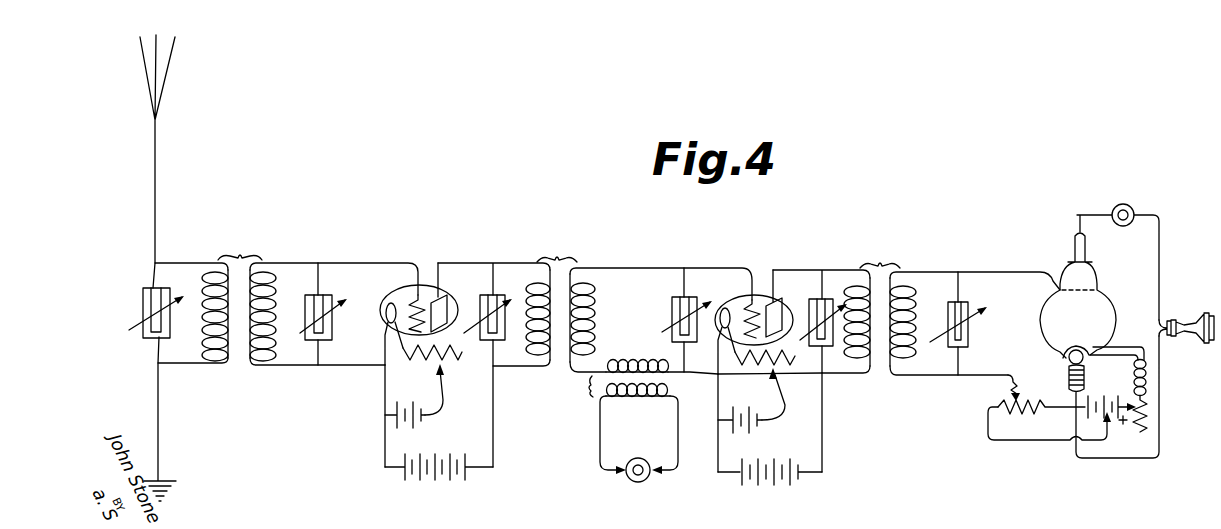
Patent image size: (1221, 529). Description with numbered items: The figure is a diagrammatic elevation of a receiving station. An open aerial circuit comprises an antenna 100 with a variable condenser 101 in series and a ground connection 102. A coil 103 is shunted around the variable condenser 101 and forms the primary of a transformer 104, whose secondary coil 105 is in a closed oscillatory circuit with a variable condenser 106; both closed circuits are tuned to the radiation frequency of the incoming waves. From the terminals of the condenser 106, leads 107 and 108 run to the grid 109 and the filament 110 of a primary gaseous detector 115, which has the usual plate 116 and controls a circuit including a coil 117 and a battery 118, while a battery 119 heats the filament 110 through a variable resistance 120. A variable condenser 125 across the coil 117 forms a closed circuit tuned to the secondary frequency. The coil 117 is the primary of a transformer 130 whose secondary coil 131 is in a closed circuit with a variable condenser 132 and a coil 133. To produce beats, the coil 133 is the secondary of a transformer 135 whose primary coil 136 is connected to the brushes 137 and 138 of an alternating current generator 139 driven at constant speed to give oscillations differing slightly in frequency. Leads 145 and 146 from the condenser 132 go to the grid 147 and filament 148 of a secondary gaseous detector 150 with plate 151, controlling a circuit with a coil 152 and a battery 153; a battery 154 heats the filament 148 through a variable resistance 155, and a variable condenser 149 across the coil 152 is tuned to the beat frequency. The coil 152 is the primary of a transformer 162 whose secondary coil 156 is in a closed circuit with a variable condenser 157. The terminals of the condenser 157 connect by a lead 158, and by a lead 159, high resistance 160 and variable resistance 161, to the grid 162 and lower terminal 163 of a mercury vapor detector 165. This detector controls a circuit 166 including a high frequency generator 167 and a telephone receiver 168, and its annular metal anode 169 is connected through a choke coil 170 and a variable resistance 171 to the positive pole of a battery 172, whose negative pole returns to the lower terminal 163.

The antenna 100 is at (175, 172).
The variable condenser 101 is at (150, 340).
The ground 102 is at (168, 484).
The coil 103 is at (206, 274).
The transformer 104 is at (245, 255).
The secondary coil 105 is at (274, 286).
The variable condenser 106 is at (328, 291).
The lead 107 is at (361, 266).
The lead 108 is at (352, 367).
The grid 109 is at (370, 321).
The filament 110 is at (415, 303).
The primary gaseous detector 115 is at (421, 284).
The plate 116 is at (441, 306).
The coil 117 is at (532, 345).
The battery 118 is at (444, 479).
The battery 119 is at (407, 406).
The variable resistance 120 is at (446, 360).
The variable condenser 125 is at (494, 308).
The transformer 130 is at (559, 252).
The secondary coil 131 is at (592, 292).
The variable condenser 132 is at (673, 312).
The coil 133 is at (644, 358).
The transformer 135 is at (573, 392).
The primary coil 136 is at (638, 407).
The brush 137 is at (652, 462).
The brush 138 is at (622, 480).
The alternating current generator 139 is at (648, 482).
The lead 145 is at (714, 268).
The lead 146 is at (712, 374).
The grid 147 is at (749, 306).
The filament 148 is at (715, 341).
The variable condenser 149 is at (827, 302).
The secondary gaseous detector 150 is at (753, 311).
The plate 151 is at (778, 312).
The coil 152 is at (853, 374).
The battery 153 is at (770, 486).
The battery 154 is at (742, 413).
The variable resistance 155 is at (789, 365).
The secondary coil 156 is at (907, 374).
The variable condenser 157 is at (966, 316).
The lead 158 is at (1014, 274).
The lead 159 is at (966, 377).
The high resistance 160 is at (1021, 386).
The variable resistance 161 is at (1024, 412).
The transformer 162 is at (880, 257).
The lower terminal 163 is at (1086, 378).
The mercury vapor detector 165 is at (1106, 285).
The circuit 166 is at (1088, 215).
The high frequency alternating current generator 167 is at (1122, 227).
The telephone receiver 168 is at (1190, 332).
The annular metal anode 169 is at (1068, 355).
The choke coil 170 is at (1148, 375).
The variable resistance 171 is at (1150, 410).
The battery 172 is at (1110, 430).